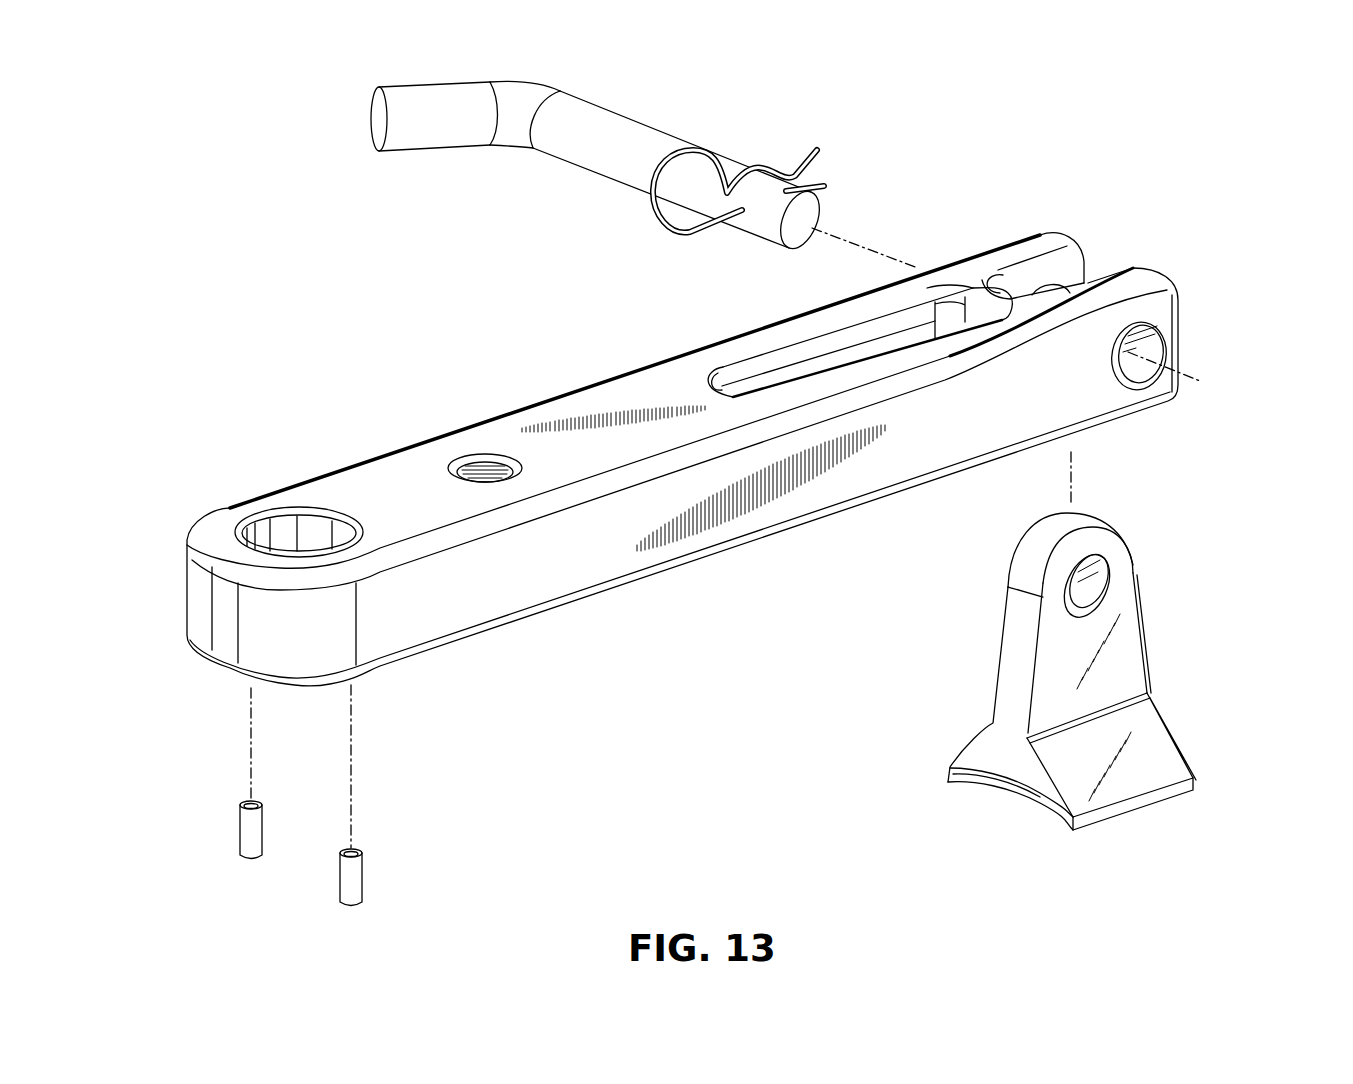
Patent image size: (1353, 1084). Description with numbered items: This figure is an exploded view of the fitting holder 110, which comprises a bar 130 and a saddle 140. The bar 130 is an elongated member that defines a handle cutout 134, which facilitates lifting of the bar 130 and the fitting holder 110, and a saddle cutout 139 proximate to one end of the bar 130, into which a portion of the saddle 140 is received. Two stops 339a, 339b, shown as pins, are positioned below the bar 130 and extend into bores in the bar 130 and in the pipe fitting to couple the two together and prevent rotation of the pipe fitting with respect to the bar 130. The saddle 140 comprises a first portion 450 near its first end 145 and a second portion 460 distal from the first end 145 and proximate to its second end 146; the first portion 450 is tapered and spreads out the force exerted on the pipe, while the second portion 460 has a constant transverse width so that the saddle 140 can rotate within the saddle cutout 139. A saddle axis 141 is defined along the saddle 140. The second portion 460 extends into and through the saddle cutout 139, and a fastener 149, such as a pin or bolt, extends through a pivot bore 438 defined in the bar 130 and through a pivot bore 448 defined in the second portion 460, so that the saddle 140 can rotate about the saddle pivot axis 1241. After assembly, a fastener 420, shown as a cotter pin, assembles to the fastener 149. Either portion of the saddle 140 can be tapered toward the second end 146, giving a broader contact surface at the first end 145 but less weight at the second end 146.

The fitting holder 110 is at (1103, 73).
The bar 130 is at (372, 472).
The handle cutout 134 is at (767, 368).
The saddle cutout 139 is at (1073, 276).
The pivot bore 438 is at (1150, 339).
The fastener 149 is at (608, 133).
The saddle pivot axis 1241 is at (873, 247).
The fastener 420 is at (660, 185).
The saddle axis 141 is at (1071, 477).
The saddle 140 is at (1078, 690).
The second end 146 is at (1066, 521).
The pivot bore 448 is at (1100, 577).
The second portion 460 is at (1023, 632).
The first portion 450 is at (1167, 765).
The first end 145 is at (1040, 797).
The stop 339a is at (356, 878).
The stop 339b is at (247, 823).